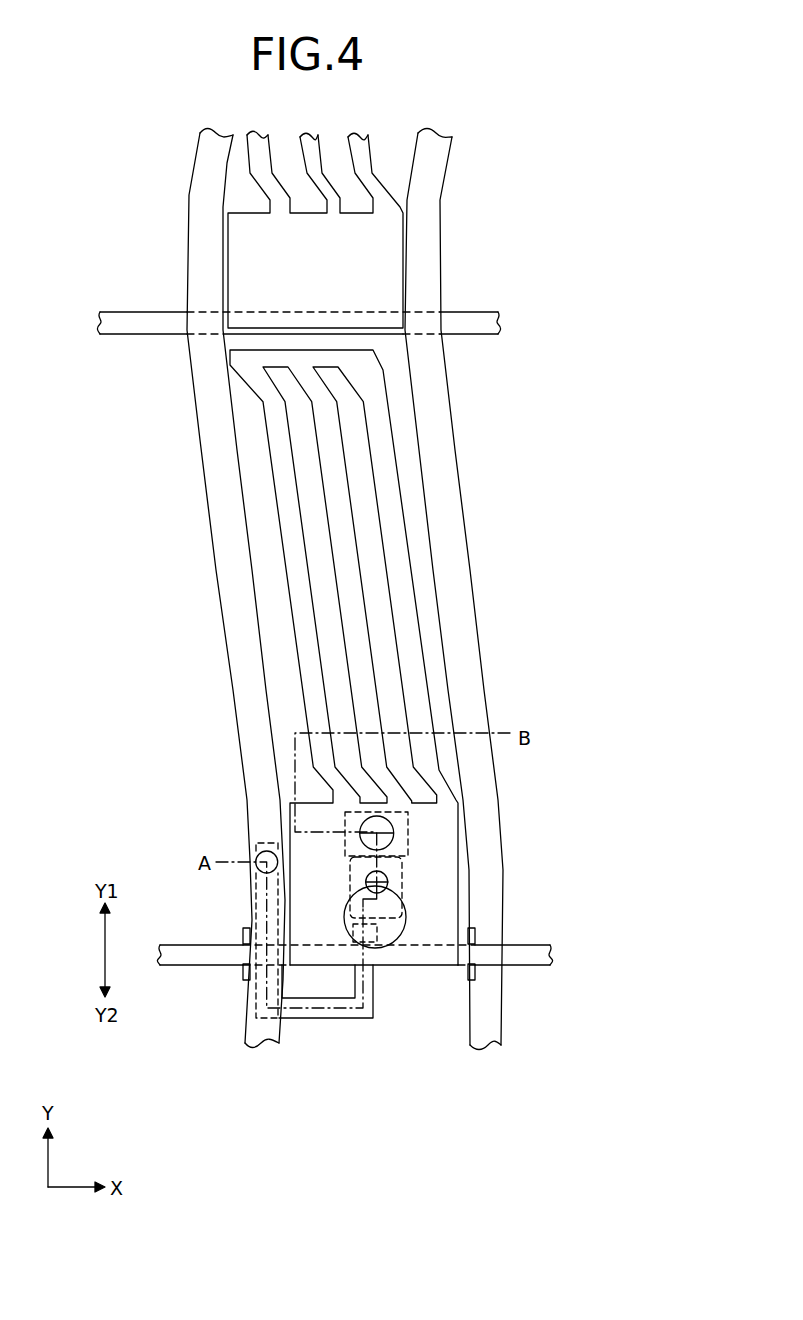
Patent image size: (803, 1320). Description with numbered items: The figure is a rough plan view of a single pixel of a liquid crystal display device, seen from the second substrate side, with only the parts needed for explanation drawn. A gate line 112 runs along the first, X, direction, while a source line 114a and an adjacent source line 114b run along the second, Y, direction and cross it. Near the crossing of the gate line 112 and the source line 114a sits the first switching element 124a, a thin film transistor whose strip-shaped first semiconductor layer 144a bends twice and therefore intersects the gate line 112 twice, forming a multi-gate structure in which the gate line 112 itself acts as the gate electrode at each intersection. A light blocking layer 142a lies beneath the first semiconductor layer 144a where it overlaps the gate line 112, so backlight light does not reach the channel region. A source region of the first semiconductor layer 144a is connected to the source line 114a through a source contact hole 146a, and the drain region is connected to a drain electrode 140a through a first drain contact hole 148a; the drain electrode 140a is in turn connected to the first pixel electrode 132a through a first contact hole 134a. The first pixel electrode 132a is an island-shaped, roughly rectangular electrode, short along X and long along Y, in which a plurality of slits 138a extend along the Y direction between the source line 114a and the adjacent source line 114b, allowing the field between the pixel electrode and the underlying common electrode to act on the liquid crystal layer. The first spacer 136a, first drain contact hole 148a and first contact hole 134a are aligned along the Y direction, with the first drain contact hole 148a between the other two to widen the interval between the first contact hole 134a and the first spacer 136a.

The gate line 112 is at (523, 964).
The source line 114a is at (205, 380).
The adjacent source line 114b is at (430, 387).
The first switching element 124a is at (402, 1022).
The first pixel electrode 132a is at (387, 505).
The first contact hole 134a is at (390, 826).
The first spacer 136a is at (405, 917).
The slit 138a is at (378, 560).
The drain electrode 140a is at (385, 881).
The light blocking layer 142a is at (380, 988).
The first semiconductor layer 144a is at (308, 1018).
The source contact hole 146a is at (259, 856).
The first drain contact hole 148a is at (398, 898).